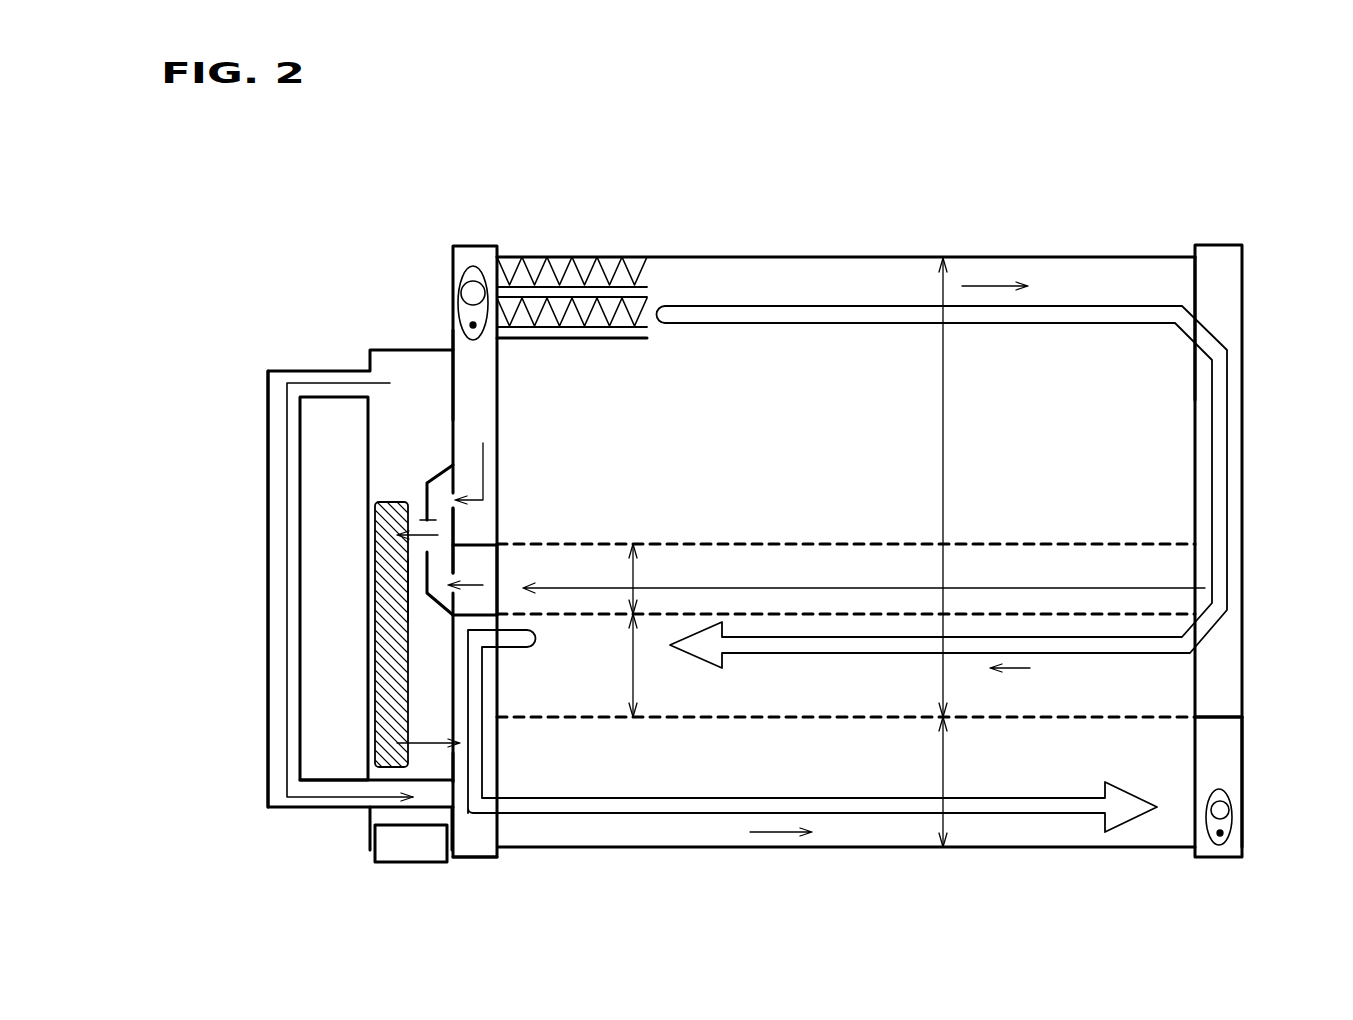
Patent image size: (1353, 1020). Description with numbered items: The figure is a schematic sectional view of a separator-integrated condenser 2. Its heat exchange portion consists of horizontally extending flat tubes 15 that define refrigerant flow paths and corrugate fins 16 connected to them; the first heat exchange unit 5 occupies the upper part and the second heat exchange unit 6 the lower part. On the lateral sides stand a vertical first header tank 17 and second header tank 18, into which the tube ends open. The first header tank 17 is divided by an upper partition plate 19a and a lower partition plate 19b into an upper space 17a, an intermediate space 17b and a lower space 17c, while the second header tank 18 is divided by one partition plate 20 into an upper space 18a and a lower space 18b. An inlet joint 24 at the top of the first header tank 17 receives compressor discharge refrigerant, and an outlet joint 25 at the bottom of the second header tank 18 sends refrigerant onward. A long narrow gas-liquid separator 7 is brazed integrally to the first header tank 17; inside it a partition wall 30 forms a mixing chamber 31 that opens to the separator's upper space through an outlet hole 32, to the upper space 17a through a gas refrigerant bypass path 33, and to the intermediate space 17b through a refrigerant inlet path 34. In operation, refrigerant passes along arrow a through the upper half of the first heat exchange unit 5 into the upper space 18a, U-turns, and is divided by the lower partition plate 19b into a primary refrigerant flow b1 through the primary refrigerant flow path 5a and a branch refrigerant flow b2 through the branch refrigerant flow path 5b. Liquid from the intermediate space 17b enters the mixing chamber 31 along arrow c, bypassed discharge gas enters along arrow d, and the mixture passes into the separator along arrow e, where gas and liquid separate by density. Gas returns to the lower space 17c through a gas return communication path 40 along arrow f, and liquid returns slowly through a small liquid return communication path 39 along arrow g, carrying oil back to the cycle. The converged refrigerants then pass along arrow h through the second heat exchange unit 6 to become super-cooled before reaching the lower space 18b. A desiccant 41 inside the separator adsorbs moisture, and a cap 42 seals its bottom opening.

The condenser 2 is at (815, 257).
The first heat exchange unit 5 is at (951, 487).
The primary refrigerant flow path 5a is at (637, 683).
The branch refrigerant flow path 5b is at (637, 570).
The second heat exchange unit 6 is at (953, 782).
The gas-liquid separator 7 is at (383, 348).
The flat tubes 15 is at (653, 290).
The corrugate fins 16 is at (543, 275).
The first header tank 17 is at (452, 315).
The upper space 17a is at (470, 388).
The intermediate space 17b is at (485, 568).
The lower space 17c is at (480, 836).
The second header tank 18 is at (1245, 270).
The upper space 18a is at (1218, 318).
The lower space 18b is at (1222, 748).
The upper partition plate 19a is at (465, 585).
The lower partition plate 19b is at (465, 618).
The partition plate 20 is at (1212, 720).
The inlet joint 24 is at (477, 292).
The outlet joint 25 is at (1228, 836).
The partition wall 30 is at (400, 500).
The mixing chamber 31 is at (405, 530).
The outlet hole 32 is at (427, 575).
The gas refrigerant bypass path 33 is at (452, 493).
The refrigerant inlet path 34 is at (427, 596).
The liquid return communication path 39 is at (453, 753).
The gas return communication path 40 is at (268, 728).
The desiccant 41 is at (430, 588).
The cap 42 is at (393, 848).
The arrow a is at (985, 286).
The primary refrigerant flow b1 is at (1030, 668).
The branch refrigerant flow b2 is at (985, 585).
The arrow c is at (490, 543).
The arrow d is at (485, 450).
The arrow e is at (398, 535).
The arrow f is at (320, 797).
The arrow g is at (397, 743).
The arrow h is at (770, 835).